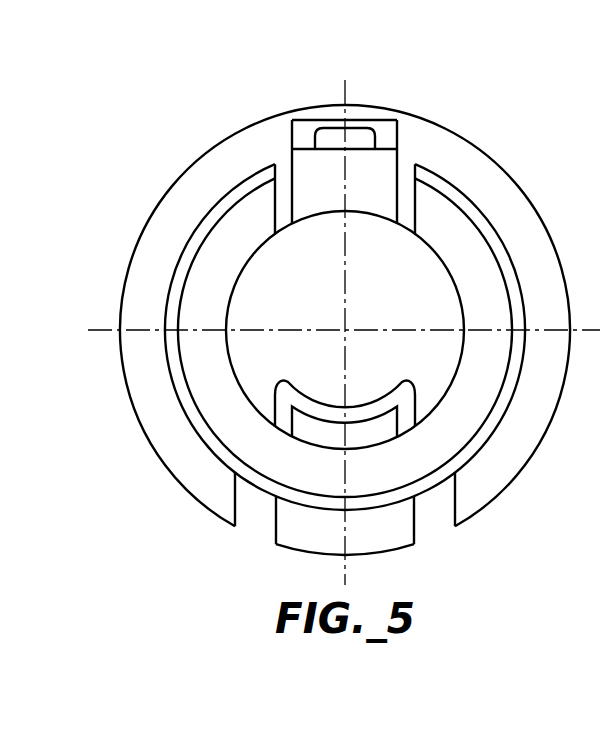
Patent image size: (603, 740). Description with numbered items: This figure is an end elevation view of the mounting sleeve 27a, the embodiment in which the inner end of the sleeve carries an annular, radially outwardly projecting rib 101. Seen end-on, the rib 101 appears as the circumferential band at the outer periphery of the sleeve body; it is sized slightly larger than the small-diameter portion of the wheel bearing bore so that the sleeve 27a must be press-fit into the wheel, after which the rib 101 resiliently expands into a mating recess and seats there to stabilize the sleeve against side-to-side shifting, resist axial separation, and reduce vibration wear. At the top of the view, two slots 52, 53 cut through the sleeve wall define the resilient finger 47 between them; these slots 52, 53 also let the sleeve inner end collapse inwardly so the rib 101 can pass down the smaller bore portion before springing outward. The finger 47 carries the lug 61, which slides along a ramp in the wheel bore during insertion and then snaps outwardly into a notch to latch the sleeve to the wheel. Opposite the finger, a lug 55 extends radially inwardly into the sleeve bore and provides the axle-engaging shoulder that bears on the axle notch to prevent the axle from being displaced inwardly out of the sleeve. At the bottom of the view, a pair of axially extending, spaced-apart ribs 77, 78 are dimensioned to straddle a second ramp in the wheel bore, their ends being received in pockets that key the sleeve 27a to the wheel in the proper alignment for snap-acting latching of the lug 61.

The sleeve 27a is at (255, 70).
The annular rib 101 is at (214, 207).
The slot 53 is at (287, 163).
The slot 52 is at (405, 172).
The lug 61 is at (373, 115).
The resilient finger 47 is at (358, 198).
The lug 55 is at (360, 423).
The rib 78 is at (269, 525).
The rib 77 is at (429, 518).